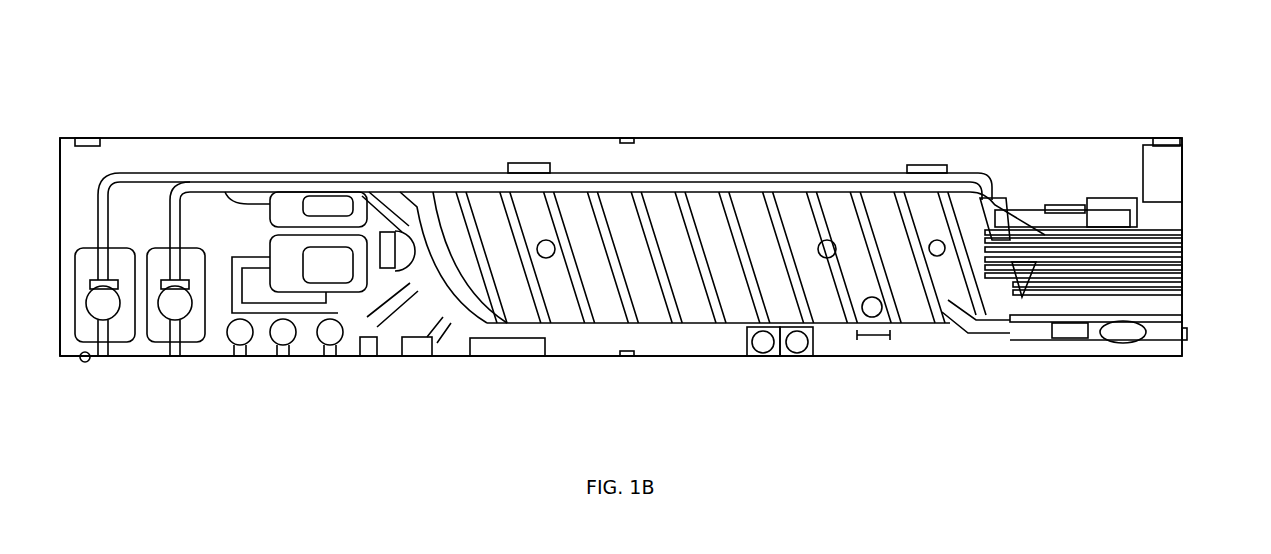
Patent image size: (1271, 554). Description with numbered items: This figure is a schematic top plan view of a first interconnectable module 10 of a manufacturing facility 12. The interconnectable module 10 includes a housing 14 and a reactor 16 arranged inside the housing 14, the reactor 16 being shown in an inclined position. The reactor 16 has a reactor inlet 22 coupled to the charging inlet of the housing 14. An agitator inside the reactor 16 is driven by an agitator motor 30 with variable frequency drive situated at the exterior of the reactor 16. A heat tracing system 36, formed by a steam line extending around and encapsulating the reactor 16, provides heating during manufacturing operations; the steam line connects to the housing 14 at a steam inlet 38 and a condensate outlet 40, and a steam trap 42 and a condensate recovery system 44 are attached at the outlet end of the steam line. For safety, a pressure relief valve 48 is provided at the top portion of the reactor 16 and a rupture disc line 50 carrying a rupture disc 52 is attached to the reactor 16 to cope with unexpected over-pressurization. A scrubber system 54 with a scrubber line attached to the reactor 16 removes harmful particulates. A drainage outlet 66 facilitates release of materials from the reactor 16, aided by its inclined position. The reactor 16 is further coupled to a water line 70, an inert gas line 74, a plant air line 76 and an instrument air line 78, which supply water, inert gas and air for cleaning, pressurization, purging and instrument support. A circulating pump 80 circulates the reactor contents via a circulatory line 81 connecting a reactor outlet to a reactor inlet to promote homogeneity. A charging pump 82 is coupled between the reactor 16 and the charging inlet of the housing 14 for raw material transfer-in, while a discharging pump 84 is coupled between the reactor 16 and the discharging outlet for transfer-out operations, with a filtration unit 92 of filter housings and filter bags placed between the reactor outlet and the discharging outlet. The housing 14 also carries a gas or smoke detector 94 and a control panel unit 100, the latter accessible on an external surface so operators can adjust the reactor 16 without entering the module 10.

The first interconnectable module 10 is at (642, 114).
The manufacturing facility 12 is at (1036, 119).
The housing 14 is at (432, 140).
The reactor 16 is at (695, 330).
The reactor inlet 22 is at (1003, 198).
The agitator motor 30 is at (1073, 200).
The heat tracing system 36 is at (805, 303).
The steam inlet 38 is at (1183, 285).
The condensate outlet 40 is at (1183, 218).
The steam trap 42 is at (1060, 206).
The condensate recovery system 44 is at (1110, 200).
The pressure relief valve 48 is at (937, 256).
The rupture disc line 50 is at (1025, 332).
The rupture disc 52 is at (1072, 336).
The scrubber system 54 is at (1172, 305).
The drainage outlet 66 is at (378, 312).
The water line 70 is at (1183, 245).
The inert gas line 74 is at (1183, 232).
The plant air line 76 is at (1183, 258).
The instrument air line 78 is at (1183, 272).
The circulating pump 80 is at (330, 205).
The circulatory line 81 is at (387, 210).
The charging pump 82 is at (108, 312).
The discharging pump 84 is at (330, 277).
The filtration unit 92 is at (283, 335).
The gas or smoke detector 94 is at (70, 138).
The control panel unit 100 is at (1168, 178).